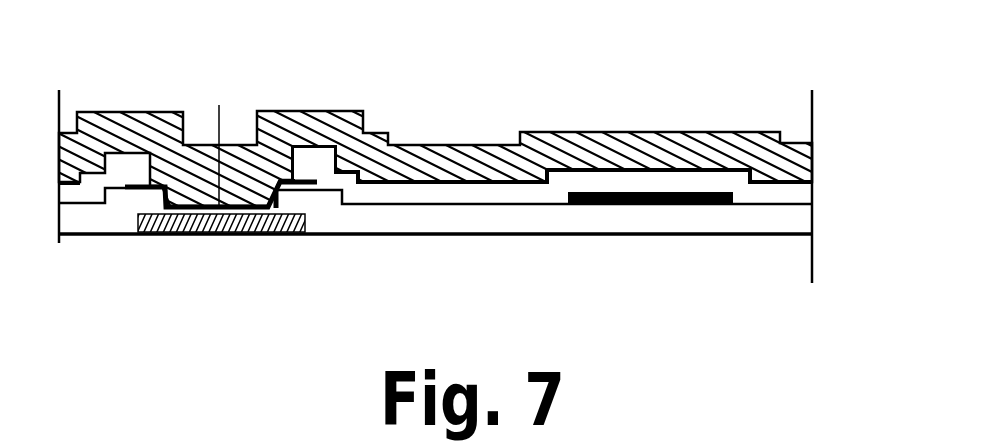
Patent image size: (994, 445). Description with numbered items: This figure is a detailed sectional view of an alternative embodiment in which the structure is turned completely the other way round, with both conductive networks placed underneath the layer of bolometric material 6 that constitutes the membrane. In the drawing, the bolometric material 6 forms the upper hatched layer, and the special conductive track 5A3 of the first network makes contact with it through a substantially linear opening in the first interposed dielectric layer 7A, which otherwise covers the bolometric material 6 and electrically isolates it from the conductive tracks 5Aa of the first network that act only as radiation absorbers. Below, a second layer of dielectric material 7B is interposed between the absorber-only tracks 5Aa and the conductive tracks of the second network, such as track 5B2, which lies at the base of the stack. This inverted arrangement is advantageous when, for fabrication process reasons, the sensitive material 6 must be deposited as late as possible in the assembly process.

The bolometric material 6 is at (594, 160).
The conductive track 5A3 is at (307, 172).
The conductive tracks 5Aa is at (703, 192).
The conductive track 5B2 is at (204, 234).
The first interposed dielectric layer 7A is at (497, 192).
The second layer of dielectric material 7B is at (673, 222).